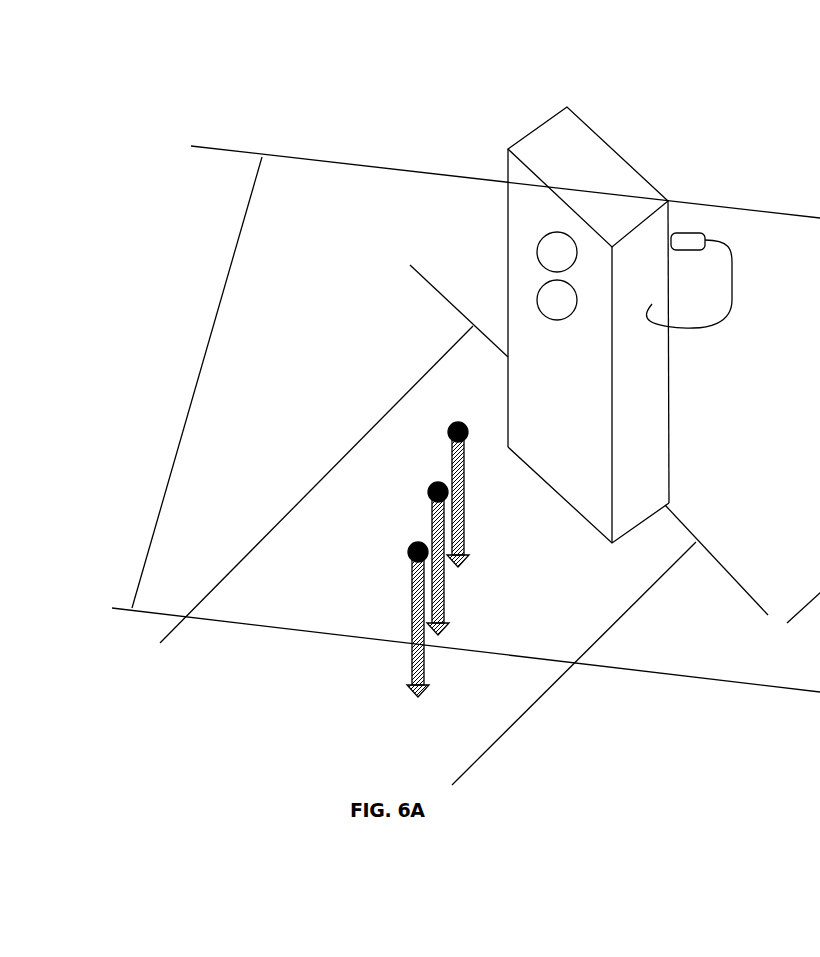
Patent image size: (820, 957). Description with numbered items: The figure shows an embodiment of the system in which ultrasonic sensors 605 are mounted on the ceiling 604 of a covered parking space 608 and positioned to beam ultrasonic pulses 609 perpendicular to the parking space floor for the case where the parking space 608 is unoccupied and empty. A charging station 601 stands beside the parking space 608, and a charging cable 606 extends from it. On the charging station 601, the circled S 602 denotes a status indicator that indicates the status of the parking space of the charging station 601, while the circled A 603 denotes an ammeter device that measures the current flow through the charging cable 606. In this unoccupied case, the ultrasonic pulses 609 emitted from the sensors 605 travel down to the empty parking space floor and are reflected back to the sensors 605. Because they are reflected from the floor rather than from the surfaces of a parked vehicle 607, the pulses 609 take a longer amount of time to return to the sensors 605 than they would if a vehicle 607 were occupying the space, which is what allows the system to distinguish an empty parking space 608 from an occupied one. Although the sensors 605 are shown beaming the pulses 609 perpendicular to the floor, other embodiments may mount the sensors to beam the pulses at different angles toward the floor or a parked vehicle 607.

The charging station 601 is at (520, 173).
The status indicator 602 is at (538, 245).
The ammeter device 603 is at (538, 294).
The ceiling 604 is at (238, 230).
The ultrasonic sensors 605 is at (448, 432).
The charging cable 606 is at (735, 283).
The vehicle 607 is at (803, 542).
The parking space 608 is at (522, 688).
The ultrasonic pulses 609 is at (412, 628).